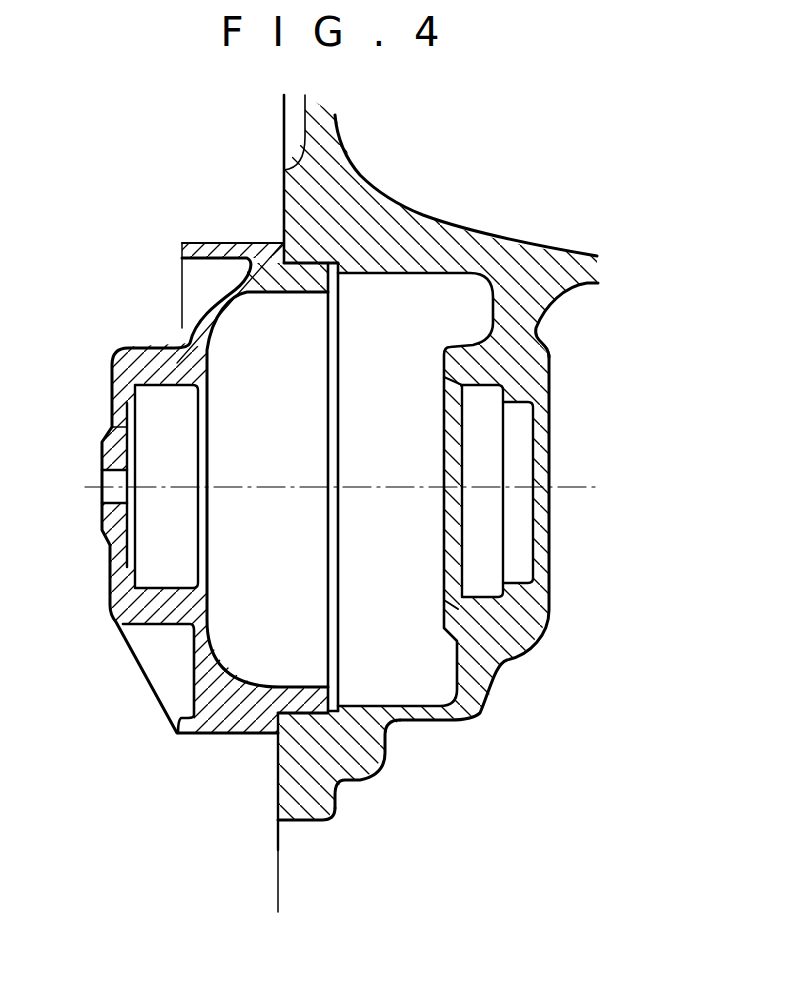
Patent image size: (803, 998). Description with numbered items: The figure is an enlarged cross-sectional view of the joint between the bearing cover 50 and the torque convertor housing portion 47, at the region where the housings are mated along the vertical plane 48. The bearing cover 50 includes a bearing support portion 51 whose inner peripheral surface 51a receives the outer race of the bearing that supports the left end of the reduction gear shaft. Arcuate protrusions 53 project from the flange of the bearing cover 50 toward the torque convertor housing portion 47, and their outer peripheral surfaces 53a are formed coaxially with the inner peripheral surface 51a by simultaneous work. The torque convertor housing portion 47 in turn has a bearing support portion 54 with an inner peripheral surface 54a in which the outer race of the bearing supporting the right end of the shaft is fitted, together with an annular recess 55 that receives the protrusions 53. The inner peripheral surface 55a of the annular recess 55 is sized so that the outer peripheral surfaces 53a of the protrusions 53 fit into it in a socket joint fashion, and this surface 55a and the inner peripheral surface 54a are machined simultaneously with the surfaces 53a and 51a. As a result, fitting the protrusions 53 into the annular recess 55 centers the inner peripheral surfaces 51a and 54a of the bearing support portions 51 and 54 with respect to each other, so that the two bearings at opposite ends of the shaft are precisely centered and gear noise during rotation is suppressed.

The torque convertor housing portion 47 is at (510, 676).
The vertical plane 48 is at (277, 797).
The bearing cover 50 is at (144, 711).
The bearing support portion 51 is at (107, 587).
The inner peripheral surface 51a is at (173, 590).
The arcuate protrusions 53 is at (337, 288).
The outer peripheral surfaces 53a is at (357, 780).
The bearing support portion 54 is at (547, 618).
The inner peripheral surface 54a is at (477, 584).
The annular recess 55 is at (328, 557).
The inner peripheral surface 55a is at (337, 777).